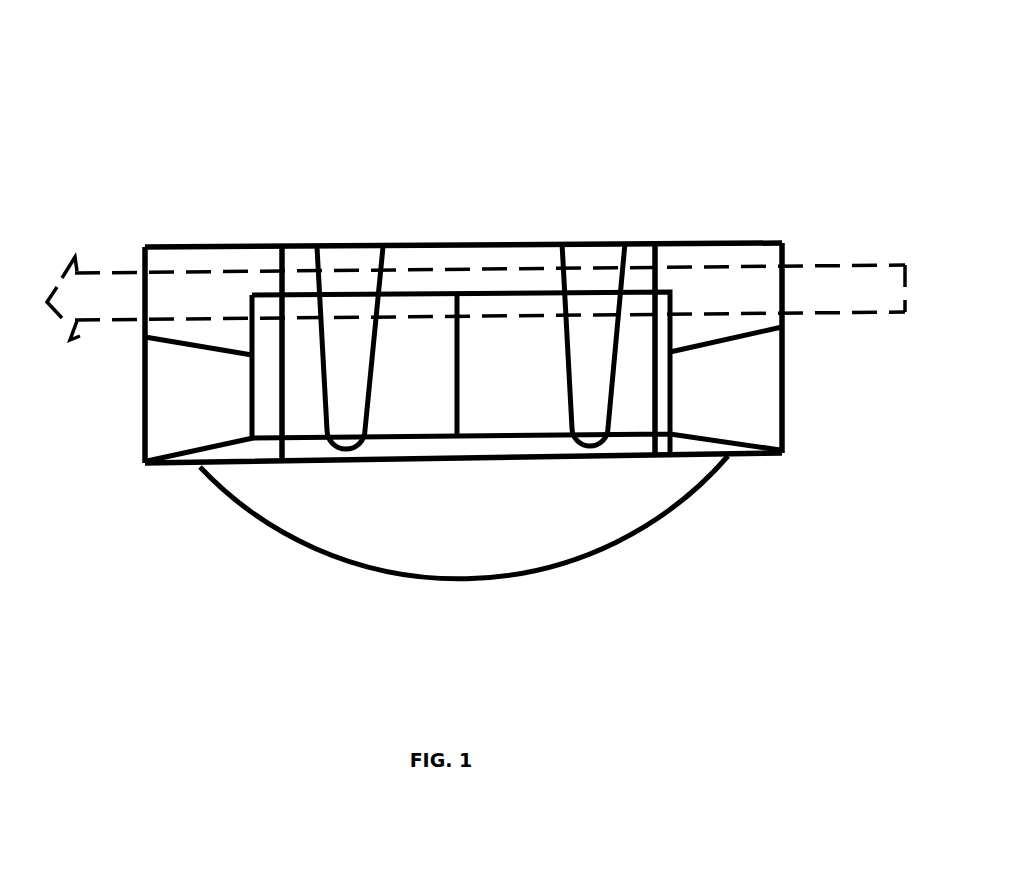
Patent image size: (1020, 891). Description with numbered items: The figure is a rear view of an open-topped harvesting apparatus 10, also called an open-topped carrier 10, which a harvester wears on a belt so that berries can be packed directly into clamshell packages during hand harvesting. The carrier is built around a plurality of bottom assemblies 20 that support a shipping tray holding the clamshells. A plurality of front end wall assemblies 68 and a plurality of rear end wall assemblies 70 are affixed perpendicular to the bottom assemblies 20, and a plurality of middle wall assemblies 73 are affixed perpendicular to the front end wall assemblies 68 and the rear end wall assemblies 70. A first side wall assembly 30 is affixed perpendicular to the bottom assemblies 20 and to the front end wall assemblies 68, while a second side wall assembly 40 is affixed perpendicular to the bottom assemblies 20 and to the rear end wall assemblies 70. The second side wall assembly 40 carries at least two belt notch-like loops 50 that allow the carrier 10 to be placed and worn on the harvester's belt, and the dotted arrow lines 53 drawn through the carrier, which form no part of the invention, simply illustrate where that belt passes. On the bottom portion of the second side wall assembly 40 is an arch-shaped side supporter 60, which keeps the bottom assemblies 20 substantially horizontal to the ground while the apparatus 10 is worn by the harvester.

The open-topped harvesting apparatus 10 is at (490, 117).
The bottom assemblies 20 is at (550, 458).
The first side wall assembly 30 is at (456, 383).
The second side wall assembly 40 is at (285, 380).
The belt notch-like loops 50 is at (570, 335).
The dotted arrow lines 53 is at (850, 266).
The arch-shaped side supporter 60 is at (548, 568).
The front end wall assemblies 68 is at (249, 364).
The rear end wall assemblies 70 is at (142, 403).
The middle wall assemblies 73 is at (205, 350).